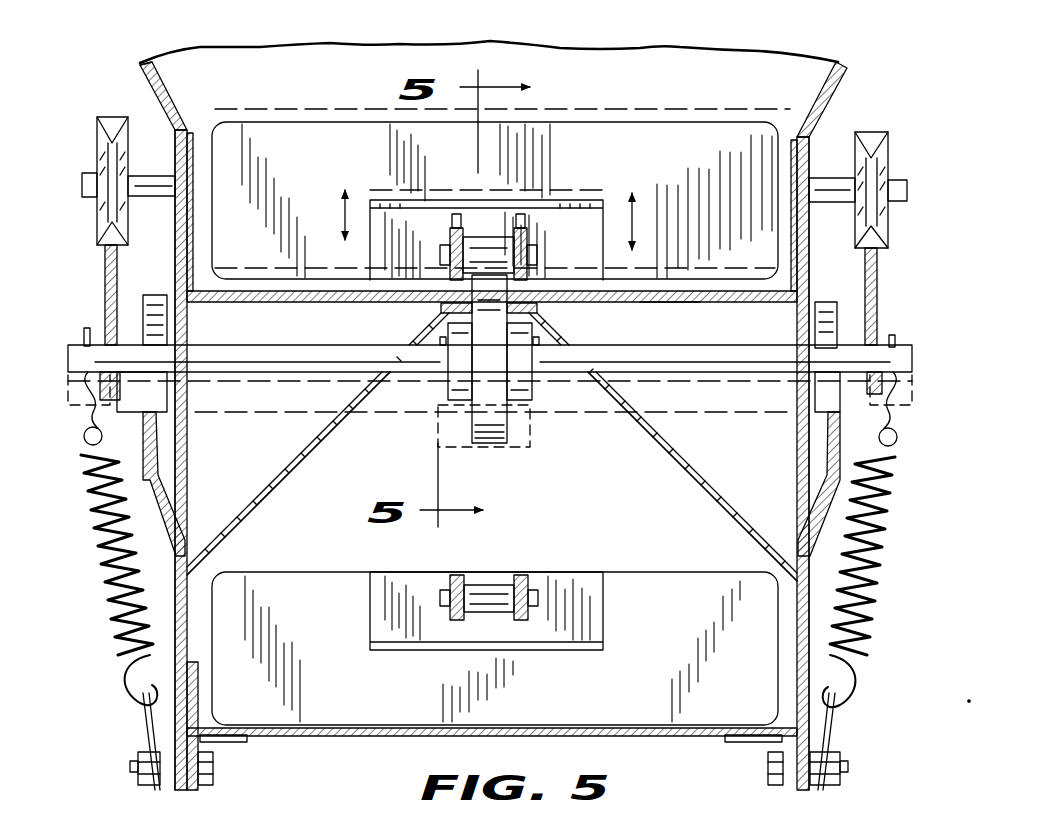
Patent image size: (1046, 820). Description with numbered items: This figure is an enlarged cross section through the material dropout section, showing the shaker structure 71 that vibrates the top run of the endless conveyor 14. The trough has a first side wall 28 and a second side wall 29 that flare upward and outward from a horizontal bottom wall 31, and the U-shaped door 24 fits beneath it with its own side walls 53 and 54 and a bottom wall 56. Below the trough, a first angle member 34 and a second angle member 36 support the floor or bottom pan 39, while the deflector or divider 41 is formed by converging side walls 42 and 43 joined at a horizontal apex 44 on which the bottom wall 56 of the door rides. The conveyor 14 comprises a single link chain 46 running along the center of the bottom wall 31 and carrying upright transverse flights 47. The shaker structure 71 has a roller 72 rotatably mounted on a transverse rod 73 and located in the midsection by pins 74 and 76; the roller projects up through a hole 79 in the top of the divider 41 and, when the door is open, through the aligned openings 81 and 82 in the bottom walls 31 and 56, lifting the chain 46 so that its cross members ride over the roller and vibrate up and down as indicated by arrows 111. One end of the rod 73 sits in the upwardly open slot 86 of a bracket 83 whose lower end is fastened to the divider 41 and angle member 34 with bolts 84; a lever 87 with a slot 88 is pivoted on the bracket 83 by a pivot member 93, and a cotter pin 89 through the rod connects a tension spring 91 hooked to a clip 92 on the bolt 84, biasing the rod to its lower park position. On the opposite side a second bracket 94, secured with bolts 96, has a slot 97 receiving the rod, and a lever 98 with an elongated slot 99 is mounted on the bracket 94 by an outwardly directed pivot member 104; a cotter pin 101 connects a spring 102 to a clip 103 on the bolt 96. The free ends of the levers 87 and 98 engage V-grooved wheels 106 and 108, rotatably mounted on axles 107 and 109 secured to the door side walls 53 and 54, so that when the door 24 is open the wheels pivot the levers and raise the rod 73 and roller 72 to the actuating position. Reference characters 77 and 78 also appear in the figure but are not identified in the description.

The endless conveyor 14 is at (578, 100).
The door 24 is at (145, 62).
The first side wall 28 is at (170, 92).
The second side wall 29 is at (822, 72).
The bottom wall 31 is at (742, 282).
The first angle member 34 is at (228, 745).
The second angle member 36 is at (748, 745).
The bottom pan 39 is at (392, 738).
The deflector 41 is at (720, 486).
The side wall 42 is at (300, 462).
The side wall 43 is at (678, 430).
The apex 44 is at (560, 320).
The link chain 46 is at (516, 230).
The flights 47 is at (612, 135).
The side wall 53 is at (190, 112).
The side wall 54 is at (803, 112).
The bottom wall 56 is at (660, 308).
The shaker structure 71 is at (80, 480).
The roller 72 is at (490, 445).
The transverse rod 73 is at (770, 352).
The pin 74 is at (440, 380).
The pin 76 is at (535, 380).
The left strut lower portion 77 is at (362, 412).
The right strut lower portion 78 is at (625, 412).
The hole 79 is at (436, 322).
The opening 81 is at (455, 283).
The opening 82 is at (532, 292).
The bracket 83 is at (176, 565).
The bolts 84 is at (138, 780).
The slot 86 is at (168, 290).
The lever 87 is at (105, 258).
The slot 88 is at (150, 292).
The cotter pin 89 is at (86, 328).
The tension spring 91 is at (115, 600).
The clip 92 is at (140, 718).
The pivot member 93 is at (130, 400).
The second bracket 94 is at (868, 565).
The bolts 96 is at (850, 770).
The slot 97 is at (826, 302).
The lever 98 is at (880, 282).
The elongated slot 99 is at (888, 348).
The cotter pin 101 is at (912, 390).
The spring 102 is at (878, 548).
The clip 103 is at (835, 730).
The pivot member 104 is at (848, 415).
The wheel 106 is at (98, 122).
The axle 107 is at (82, 185).
The wheel 108 is at (888, 147).
The axle 109 is at (906, 187).
The arrows 111 is at (637, 222).